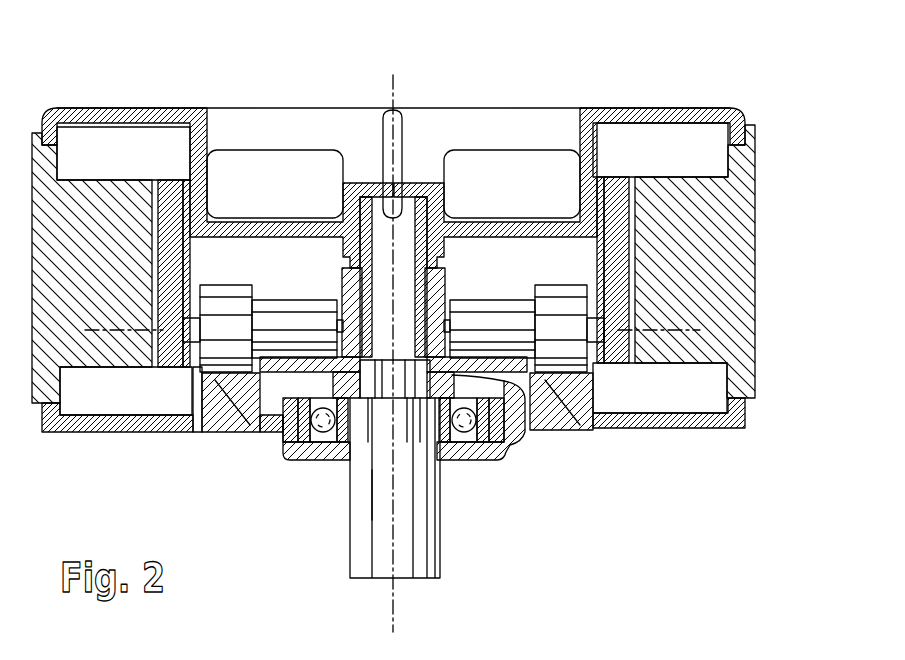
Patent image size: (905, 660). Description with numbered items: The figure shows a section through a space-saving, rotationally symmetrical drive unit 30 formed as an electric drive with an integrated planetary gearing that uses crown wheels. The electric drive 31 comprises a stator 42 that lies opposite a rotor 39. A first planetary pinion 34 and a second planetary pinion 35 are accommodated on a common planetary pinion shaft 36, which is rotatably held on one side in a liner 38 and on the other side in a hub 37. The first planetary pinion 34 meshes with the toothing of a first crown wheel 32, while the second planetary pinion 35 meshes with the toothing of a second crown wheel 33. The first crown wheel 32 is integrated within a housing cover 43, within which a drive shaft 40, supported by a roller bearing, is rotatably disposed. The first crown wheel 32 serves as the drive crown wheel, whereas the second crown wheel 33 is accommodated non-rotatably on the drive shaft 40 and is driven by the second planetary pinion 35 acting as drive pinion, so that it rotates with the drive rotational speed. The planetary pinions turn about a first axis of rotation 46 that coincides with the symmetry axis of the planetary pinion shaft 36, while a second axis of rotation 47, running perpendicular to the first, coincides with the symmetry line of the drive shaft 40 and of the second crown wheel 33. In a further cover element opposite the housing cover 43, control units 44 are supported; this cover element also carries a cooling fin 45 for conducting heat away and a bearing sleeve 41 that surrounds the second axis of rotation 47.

The drive unit 30 is at (697, 65).
The electric drive 31 is at (108, 388).
The first crown wheel 32 is at (227, 383).
The second crown wheel 33 is at (582, 430).
The first planetary pinion 34 is at (228, 303).
The second planetary pinion 35 is at (298, 308).
The planetary pinion shaft 36 is at (197, 377).
The hub 37 is at (517, 383).
The liner 38 is at (600, 208).
The rotor 39 is at (617, 240).
The drive shaft 40 is at (420, 535).
The bearing sleeve 41 is at (427, 190).
The stator 42 is at (710, 277).
The housing cover 43 is at (678, 423).
The control units 44 is at (281, 177).
The cooling fin 45 is at (397, 135).
The first axis of rotation 46 is at (667, 327).
The second axis of rotation 47 is at (390, 495).